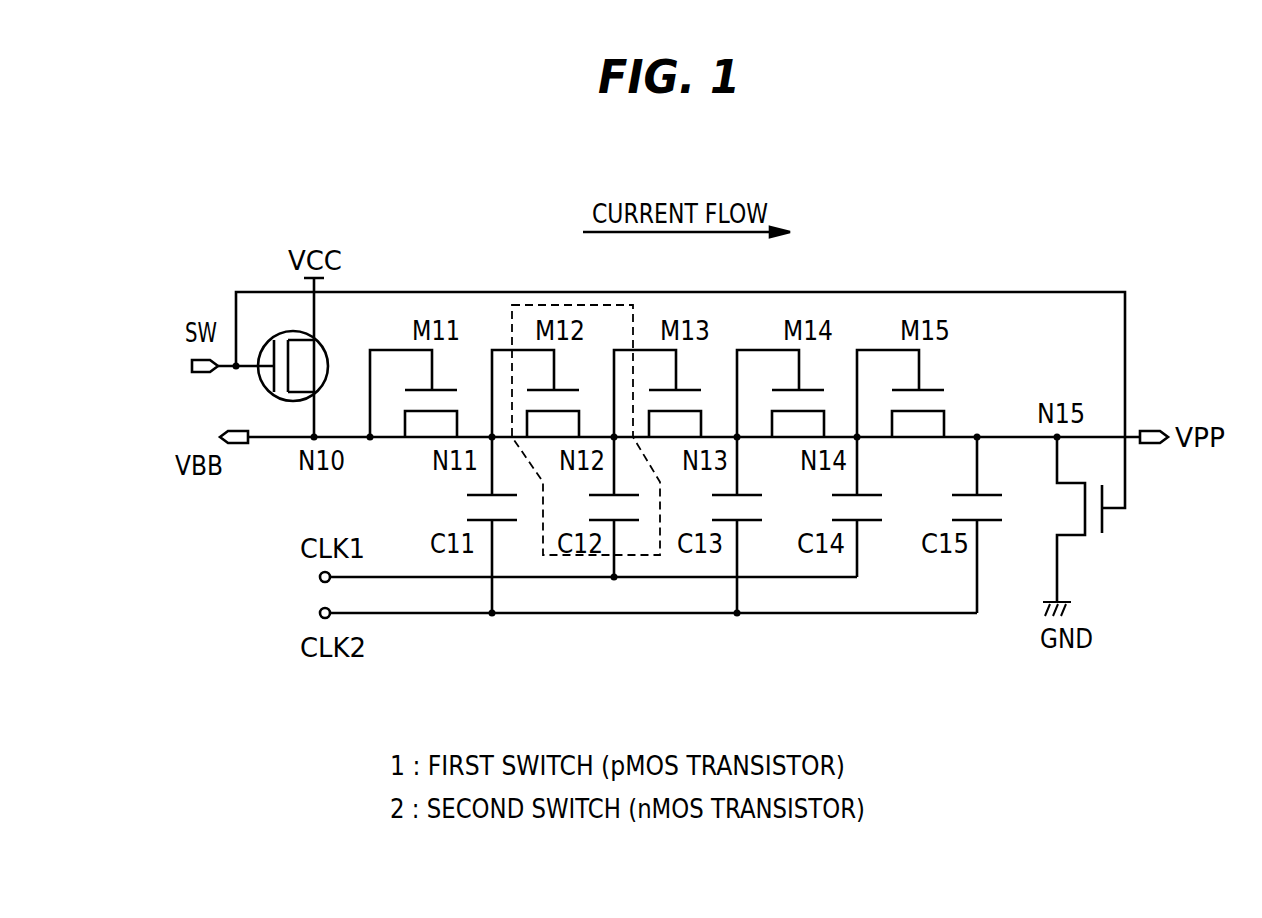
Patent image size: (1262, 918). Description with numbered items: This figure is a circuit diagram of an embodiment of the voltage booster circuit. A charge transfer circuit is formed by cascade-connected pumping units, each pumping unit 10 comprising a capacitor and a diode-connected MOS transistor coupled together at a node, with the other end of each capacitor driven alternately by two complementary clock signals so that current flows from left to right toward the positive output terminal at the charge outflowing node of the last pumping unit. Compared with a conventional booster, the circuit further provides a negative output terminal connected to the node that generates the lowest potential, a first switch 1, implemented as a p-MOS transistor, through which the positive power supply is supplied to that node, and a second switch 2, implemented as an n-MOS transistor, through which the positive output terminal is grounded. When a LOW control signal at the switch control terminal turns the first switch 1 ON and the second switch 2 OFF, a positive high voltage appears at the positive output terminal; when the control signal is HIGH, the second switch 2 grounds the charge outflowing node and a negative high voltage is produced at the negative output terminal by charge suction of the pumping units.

The first switch 1 is at (275, 337).
The second switch 2 is at (1070, 537).
The pumping unit 10 is at (586, 407).